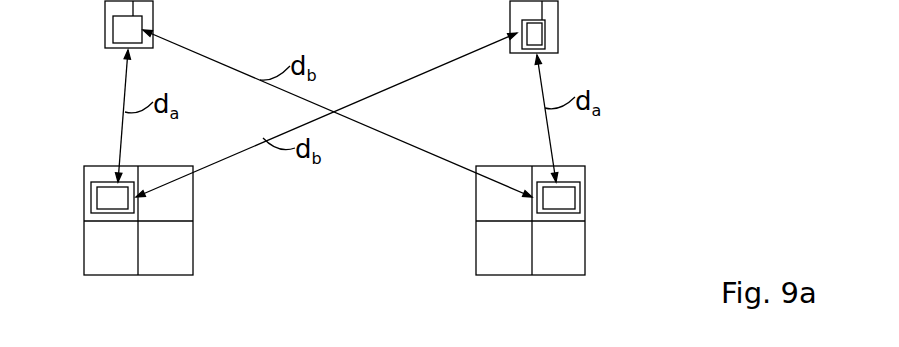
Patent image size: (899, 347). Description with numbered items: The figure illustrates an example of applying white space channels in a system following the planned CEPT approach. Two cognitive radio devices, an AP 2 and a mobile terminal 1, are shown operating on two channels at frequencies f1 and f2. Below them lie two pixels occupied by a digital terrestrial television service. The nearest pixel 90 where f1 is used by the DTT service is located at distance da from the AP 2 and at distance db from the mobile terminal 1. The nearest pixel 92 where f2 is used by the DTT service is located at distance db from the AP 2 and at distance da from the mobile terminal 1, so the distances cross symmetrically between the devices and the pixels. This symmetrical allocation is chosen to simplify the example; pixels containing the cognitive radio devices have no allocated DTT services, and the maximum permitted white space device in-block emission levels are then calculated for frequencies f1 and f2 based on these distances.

The mobile terminal 1 is at (547, 45).
The AP 2 is at (122, 23).
The nearest pixel where f1 is used by a DTT service 90 is at (91, 199).
The nearest pixel where f2 is used by the DTT service 92 is at (580, 218).